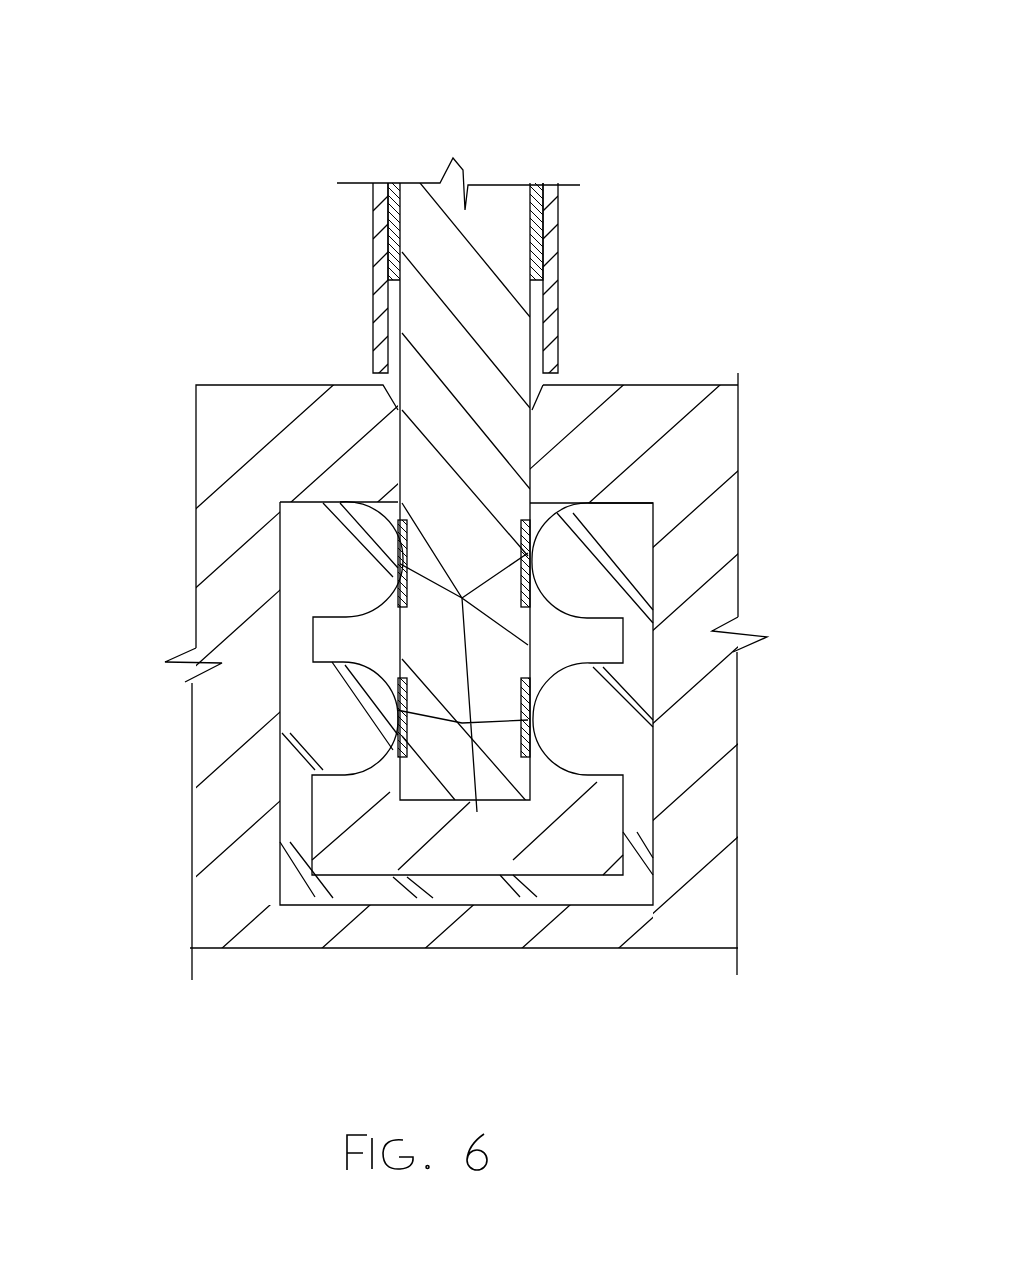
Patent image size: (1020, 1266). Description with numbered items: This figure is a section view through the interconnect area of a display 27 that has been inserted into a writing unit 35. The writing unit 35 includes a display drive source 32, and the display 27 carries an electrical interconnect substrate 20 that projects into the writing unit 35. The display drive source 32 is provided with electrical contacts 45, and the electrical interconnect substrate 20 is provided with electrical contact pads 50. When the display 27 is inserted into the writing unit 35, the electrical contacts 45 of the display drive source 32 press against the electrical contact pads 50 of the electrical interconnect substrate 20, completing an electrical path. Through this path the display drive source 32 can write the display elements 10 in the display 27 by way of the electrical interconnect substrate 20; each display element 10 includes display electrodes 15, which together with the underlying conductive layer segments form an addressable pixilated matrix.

The display 27 is at (419, 152).
The electrical interconnect substrate 20 is at (492, 220).
The display electrodes 15 is at (390, 243).
The display element 10 is at (377, 262).
The writing unit 35 is at (765, 378).
The electrical contacts 45 is at (297, 577).
The display drive source 32 is at (290, 787).
The electrical contact pads 50 is at (500, 850).